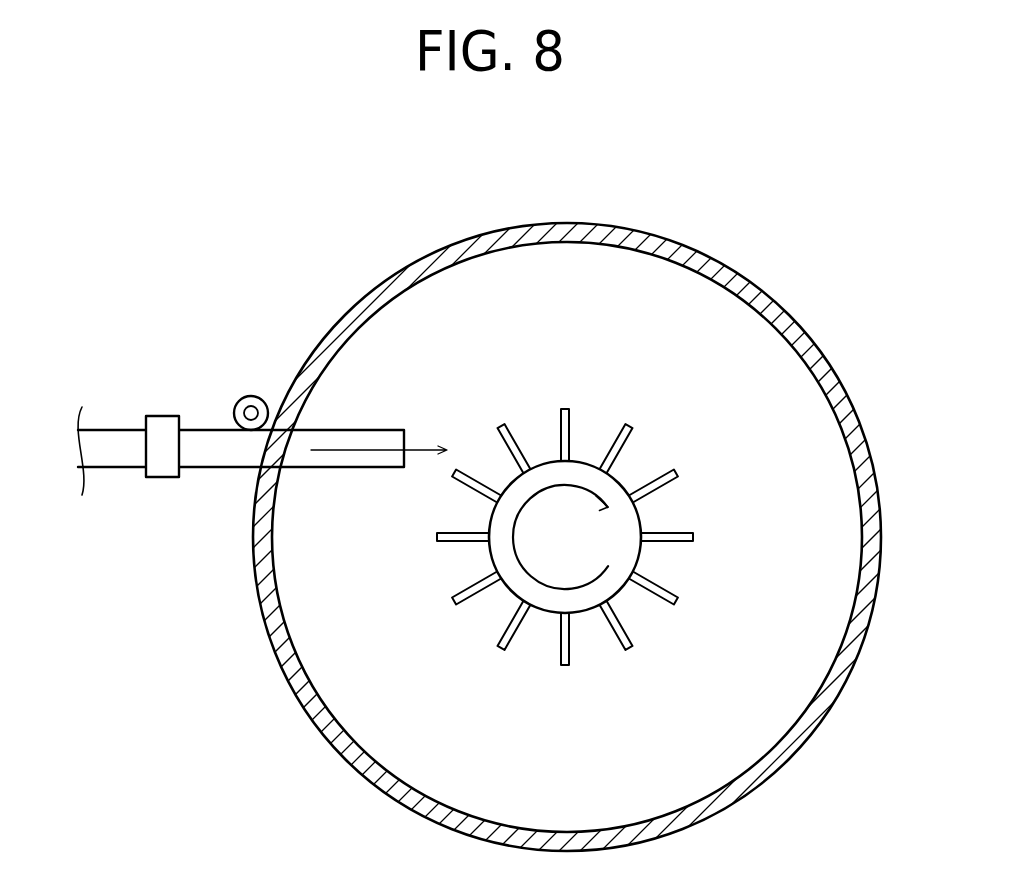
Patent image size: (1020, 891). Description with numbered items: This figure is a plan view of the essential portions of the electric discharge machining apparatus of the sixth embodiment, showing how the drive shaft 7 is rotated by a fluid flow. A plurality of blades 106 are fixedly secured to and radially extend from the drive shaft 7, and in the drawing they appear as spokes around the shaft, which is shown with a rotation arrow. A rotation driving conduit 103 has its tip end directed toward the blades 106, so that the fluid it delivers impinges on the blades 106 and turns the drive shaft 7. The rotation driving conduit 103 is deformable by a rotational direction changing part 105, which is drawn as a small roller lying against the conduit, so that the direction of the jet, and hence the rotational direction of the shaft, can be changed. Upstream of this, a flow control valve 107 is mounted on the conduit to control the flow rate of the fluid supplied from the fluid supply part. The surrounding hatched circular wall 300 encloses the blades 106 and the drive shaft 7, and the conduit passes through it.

The processing chamber 300 is at (800, 328).
The rotation driving conduit 103 is at (340, 430).
The rotational direction changing part 105 is at (236, 405).
The flow control valve 107 is at (158, 478).
The blades 106 is at (568, 427).
The drive shaft 7 is at (641, 520).